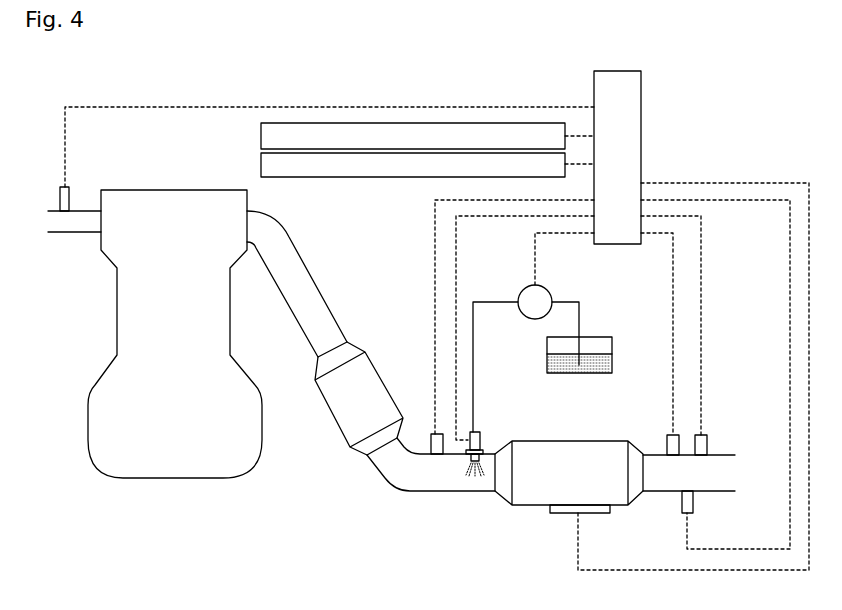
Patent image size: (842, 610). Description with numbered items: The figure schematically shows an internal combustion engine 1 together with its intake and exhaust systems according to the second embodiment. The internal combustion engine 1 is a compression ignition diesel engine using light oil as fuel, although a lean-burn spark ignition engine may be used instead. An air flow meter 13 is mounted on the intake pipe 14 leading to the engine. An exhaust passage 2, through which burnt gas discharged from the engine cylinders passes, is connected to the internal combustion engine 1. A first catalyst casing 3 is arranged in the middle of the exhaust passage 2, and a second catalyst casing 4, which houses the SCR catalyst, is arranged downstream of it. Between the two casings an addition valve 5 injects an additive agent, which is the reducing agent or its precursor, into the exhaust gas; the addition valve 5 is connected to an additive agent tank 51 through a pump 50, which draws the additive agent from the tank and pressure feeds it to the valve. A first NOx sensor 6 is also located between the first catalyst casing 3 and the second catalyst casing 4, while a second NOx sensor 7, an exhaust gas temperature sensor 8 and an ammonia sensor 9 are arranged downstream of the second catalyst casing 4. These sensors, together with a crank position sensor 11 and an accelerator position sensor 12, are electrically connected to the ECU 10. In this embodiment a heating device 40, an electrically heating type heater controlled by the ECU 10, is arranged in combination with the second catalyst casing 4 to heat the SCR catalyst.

The internal combustion engine 1 is at (180, 478).
The exhaust passage 2 is at (316, 278).
The first catalyst casing 3 is at (337, 428).
The second catalyst casing 4 is at (578, 441).
The addition valve 5 is at (484, 436).
The first NOx sensor 6 is at (433, 434).
The second NOx sensor 7 is at (665, 440).
The exhaust gas temperature sensor 8 is at (708, 440).
The ammonia sensor 9 is at (682, 505).
The ECU 10 is at (641, 112).
The crank position sensor 11 is at (261, 164).
The accelerator position sensor 12 is at (261, 136).
The air flow meter 13 is at (62, 186).
The intake pipe 14 is at (80, 233).
The heating device 40 is at (570, 513).
The pump 50 is at (545, 290).
The additive agent tank 51 is at (600, 337).